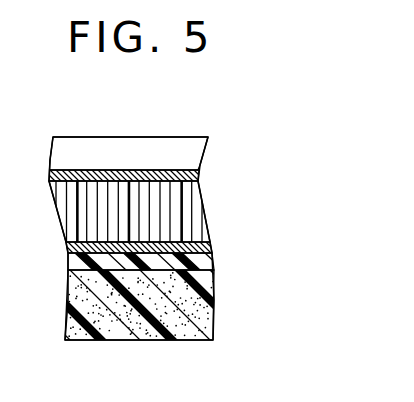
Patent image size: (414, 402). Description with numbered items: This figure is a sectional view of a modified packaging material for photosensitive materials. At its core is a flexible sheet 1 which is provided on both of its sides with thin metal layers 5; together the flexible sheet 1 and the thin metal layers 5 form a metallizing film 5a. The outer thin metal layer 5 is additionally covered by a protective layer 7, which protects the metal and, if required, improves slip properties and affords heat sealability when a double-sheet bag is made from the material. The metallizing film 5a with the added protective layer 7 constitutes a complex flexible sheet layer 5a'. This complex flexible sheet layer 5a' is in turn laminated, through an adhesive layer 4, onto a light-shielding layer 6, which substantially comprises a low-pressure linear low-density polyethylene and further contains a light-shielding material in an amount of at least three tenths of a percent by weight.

The protective layer 7 is at (199, 151).
The thin metal layer 5 is at (198, 178).
The flexible sheet 1 is at (198, 212).
The adhesive layer 4 is at (206, 263).
The light-shielding layer 6 is at (215, 313).
The metallizing film 5a is at (300, 203).
The complex flexible sheet layer 5a' is at (351, 174).